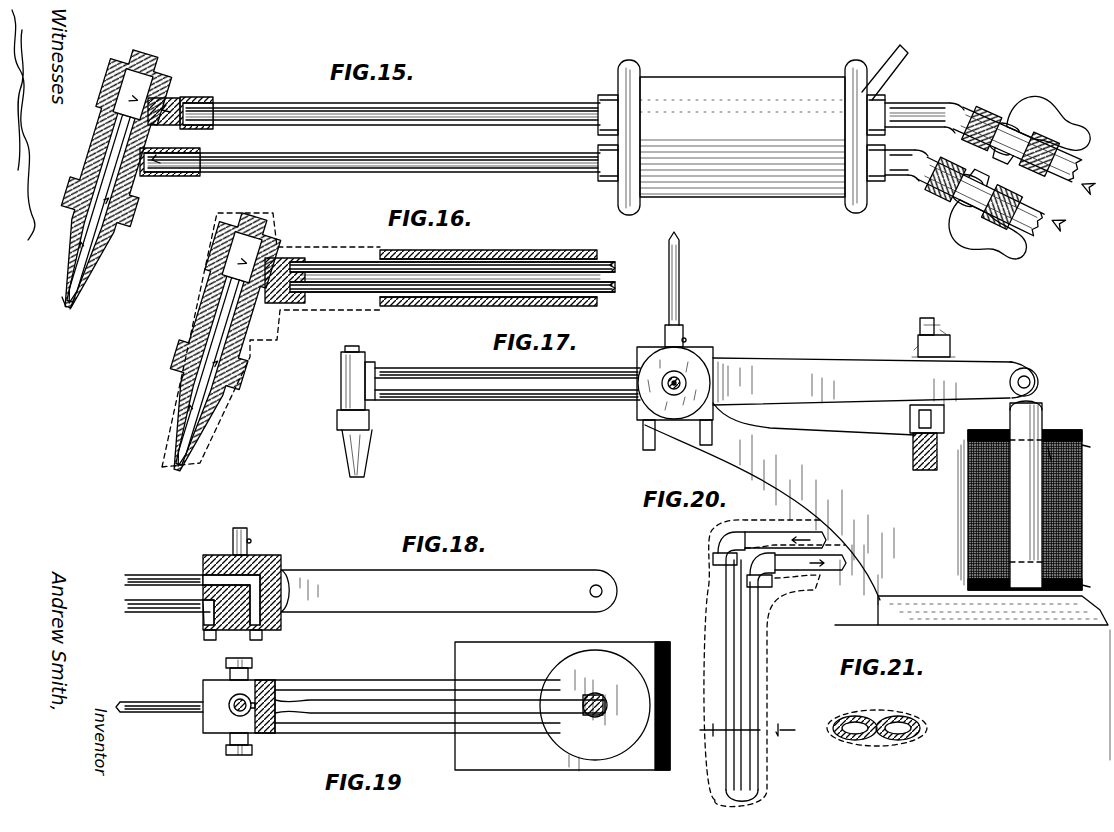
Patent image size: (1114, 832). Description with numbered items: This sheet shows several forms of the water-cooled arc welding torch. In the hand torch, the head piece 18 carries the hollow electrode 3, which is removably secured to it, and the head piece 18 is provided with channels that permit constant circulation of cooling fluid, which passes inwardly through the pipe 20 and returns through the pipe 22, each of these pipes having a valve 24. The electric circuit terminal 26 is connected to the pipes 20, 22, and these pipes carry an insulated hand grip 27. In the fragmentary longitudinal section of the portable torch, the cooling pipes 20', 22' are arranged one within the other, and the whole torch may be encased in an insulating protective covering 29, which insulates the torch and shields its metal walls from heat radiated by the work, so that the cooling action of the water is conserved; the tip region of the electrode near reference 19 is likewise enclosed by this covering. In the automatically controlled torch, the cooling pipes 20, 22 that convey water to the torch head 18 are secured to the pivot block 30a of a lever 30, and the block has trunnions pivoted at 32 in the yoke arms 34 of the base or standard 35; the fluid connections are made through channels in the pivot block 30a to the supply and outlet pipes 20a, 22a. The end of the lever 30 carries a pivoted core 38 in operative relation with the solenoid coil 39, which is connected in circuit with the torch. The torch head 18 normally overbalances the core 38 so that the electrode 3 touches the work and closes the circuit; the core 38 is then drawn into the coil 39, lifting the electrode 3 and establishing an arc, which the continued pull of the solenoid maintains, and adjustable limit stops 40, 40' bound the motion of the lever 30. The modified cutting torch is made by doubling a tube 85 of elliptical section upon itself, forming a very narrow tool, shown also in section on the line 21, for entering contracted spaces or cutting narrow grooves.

In FIG. 15, the hollow electrode 3 is at (57, 269).
In FIG. 17, the hollow electrode 3 is at (347, 458).
In FIG. 15, the head piece 18 is at (92, 157).
In FIG. 16, the head piece 18 is at (200, 316).
In FIG. 17, the head piece 18 is at (341, 394).
In FIG. 16, the nozzle tip outlet 19 is at (166, 460).
In FIG. 15, the pipe 20 is at (390, 106).
In FIG. 17, the pipe 20 is at (507, 362).
In FIG. 18, the pipe 20 is at (164, 565).
In FIG. 19, the pipe 20 is at (159, 696).
In FIG. 16, the cooling pipe 20' is at (466, 251).
In FIG. 17, the supply pipe 20a is at (703, 447).
In FIG. 18, the supply pipe 20a is at (252, 637).
In FIG. 20, the hose section line 21 is at (767, 634).
In FIG. 15, the pipe 22 is at (379, 172).
In FIG. 17, the pipe 22 is at (507, 409).
In FIG. 18, the pipe 22 is at (156, 621).
In FIG. 16, the cooling pipe 22' is at (452, 303).
In FIG. 17, the outlet pipe 22a is at (643, 447).
In FIG. 18, the outlet pipe 22a is at (204, 636).
In FIG. 15, the valve 24 is at (1040, 132).
In FIG. 15, the electric circuit terminal 26 is at (896, 70).
In FIG. 17, the electric circuit terminal 26 is at (682, 340).
In FIG. 18, the electric circuit terminal 26 is at (247, 536).
In FIG. 15, the insulated hand grip 27 is at (757, 190).
In FIG. 16, the insulating protective covering 29 is at (410, 300).
In FIG. 20, the insulating protective covering 29 is at (766, 648).
In FIG. 21, the insulating protective covering 29 is at (892, 714).
In FIG. 17, the lever 30 is at (806, 368).
In FIG. 18, the lever 30 is at (326, 612).
In FIG. 19, the lever 30 is at (380, 700).
In FIG. 17, the pivot block 30a is at (712, 360).
In FIG. 18, the pivot block 30a is at (278, 560).
In FIG. 19, the pivot block 30a is at (210, 718).
In FIG. 17, the trunnion pivot 32 is at (665, 388).
In FIG. 19, the trunnion pivot 32 is at (252, 672).
In FIG. 17, the yoke arms 34 is at (800, 490).
In FIG. 19, the yoke arms 34 is at (352, 682).
In FIG. 17, the base or standard 35 is at (878, 596).
In FIG. 19, the base or standard 35 is at (460, 652).
In FIG. 17, the pivoted core 38 is at (1042, 421).
In FIG. 19, the pivoted core 38 is at (585, 712).
In FIG. 17, the solenoid coil 39 is at (1080, 513).
In FIG. 19, the solenoid coil 39 is at (608, 655).
In FIG. 17, the adjustable limit stop 40 is at (950, 340).
In FIG. 17, the adjustable limit stop 40' is at (946, 437).
In FIG. 20, the tube of elliptical section 85 is at (760, 697).
In FIG. 21, the tube of elliptical section 85 is at (862, 740).